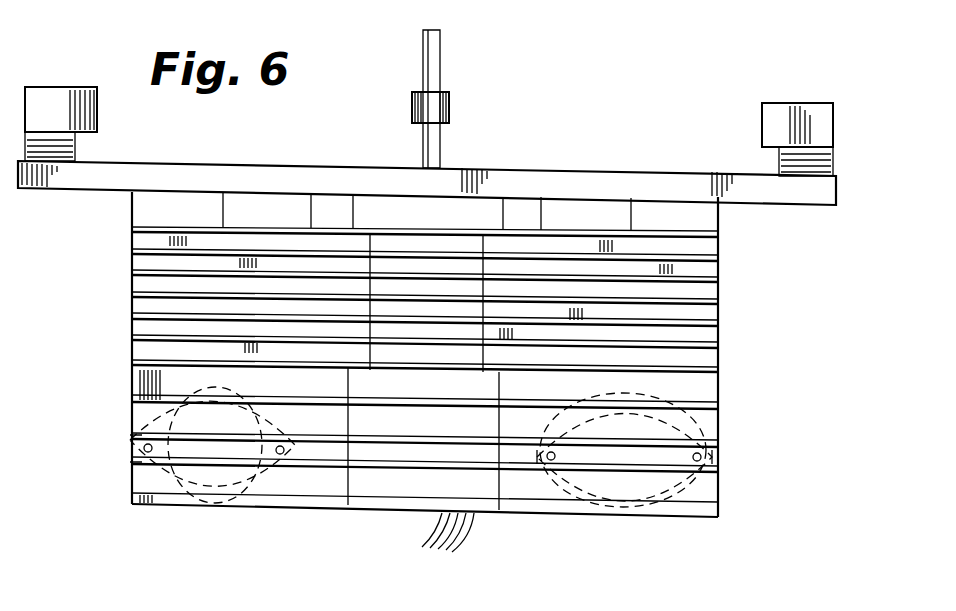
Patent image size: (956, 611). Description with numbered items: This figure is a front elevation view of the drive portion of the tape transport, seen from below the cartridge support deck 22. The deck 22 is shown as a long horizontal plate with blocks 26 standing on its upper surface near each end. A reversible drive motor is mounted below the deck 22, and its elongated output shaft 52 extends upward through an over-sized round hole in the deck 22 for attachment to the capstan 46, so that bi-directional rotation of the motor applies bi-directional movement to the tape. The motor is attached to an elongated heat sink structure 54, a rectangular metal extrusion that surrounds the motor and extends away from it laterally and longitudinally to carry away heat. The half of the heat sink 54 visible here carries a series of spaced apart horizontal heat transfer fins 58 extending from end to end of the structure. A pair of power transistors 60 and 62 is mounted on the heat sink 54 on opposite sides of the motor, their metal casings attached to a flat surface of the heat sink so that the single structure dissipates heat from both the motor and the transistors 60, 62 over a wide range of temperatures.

The cartridge support deck 22 is at (590, 150).
The mounting block 26 is at (80, 63).
The capstan 46 is at (449, 111).
The output shaft 52 is at (432, 48).
The heat sink structure 54 is at (413, 372).
The horizontal heat transfer fins 58 is at (720, 272).
The power transistor 60 is at (219, 520).
The power transistor 62 is at (566, 520).